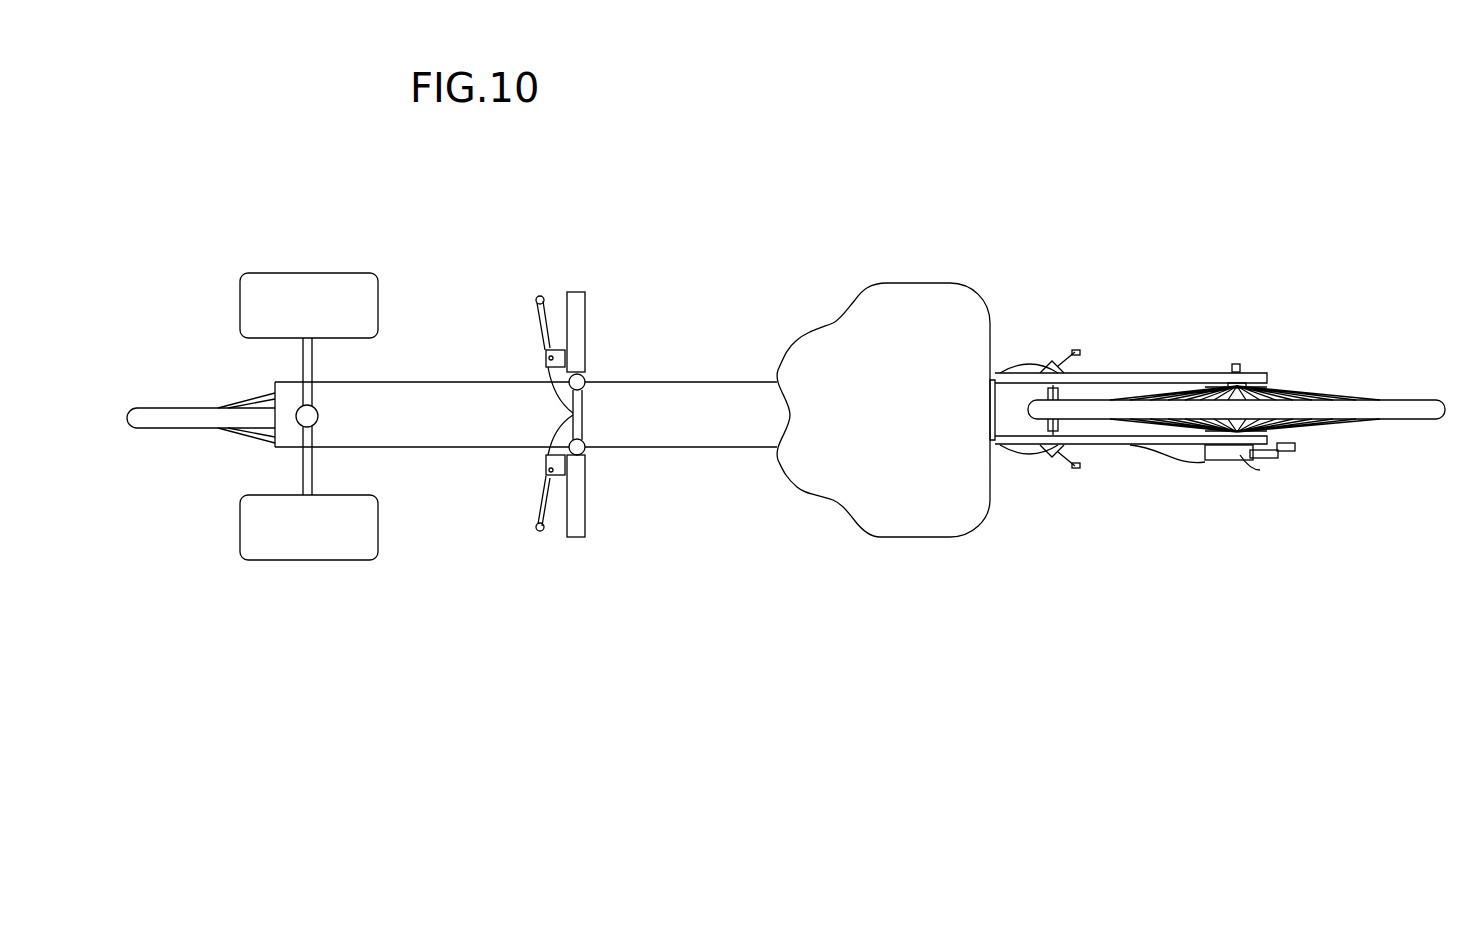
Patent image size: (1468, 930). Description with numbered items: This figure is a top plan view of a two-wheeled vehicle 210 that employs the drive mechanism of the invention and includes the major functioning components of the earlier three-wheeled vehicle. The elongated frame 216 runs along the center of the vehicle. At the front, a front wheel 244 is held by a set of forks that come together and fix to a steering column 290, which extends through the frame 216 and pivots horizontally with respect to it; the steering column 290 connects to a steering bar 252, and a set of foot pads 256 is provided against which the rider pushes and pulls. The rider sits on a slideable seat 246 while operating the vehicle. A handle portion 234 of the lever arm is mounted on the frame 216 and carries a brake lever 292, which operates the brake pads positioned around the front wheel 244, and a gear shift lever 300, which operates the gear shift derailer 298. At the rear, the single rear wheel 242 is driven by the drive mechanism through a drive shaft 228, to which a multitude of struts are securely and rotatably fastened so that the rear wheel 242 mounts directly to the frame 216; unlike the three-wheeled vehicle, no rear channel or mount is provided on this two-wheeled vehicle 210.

The two-wheeled vehicle 210 is at (788, 162).
The frame 216 is at (695, 424).
The drive shaft 228 is at (1268, 373).
The handle portion 234 is at (586, 297).
The rear wheel 242 is at (1426, 419).
The front wheel 244 is at (153, 408).
The slideable seat 246 is at (920, 283).
The steering bar 252 is at (303, 460).
The foot pads 256 is at (378, 300).
The steering column 290 is at (318, 415).
The brake lever 292 is at (536, 303).
The gear shift derailer 298 is at (1258, 462).
The gear shift lever 300 is at (537, 520).